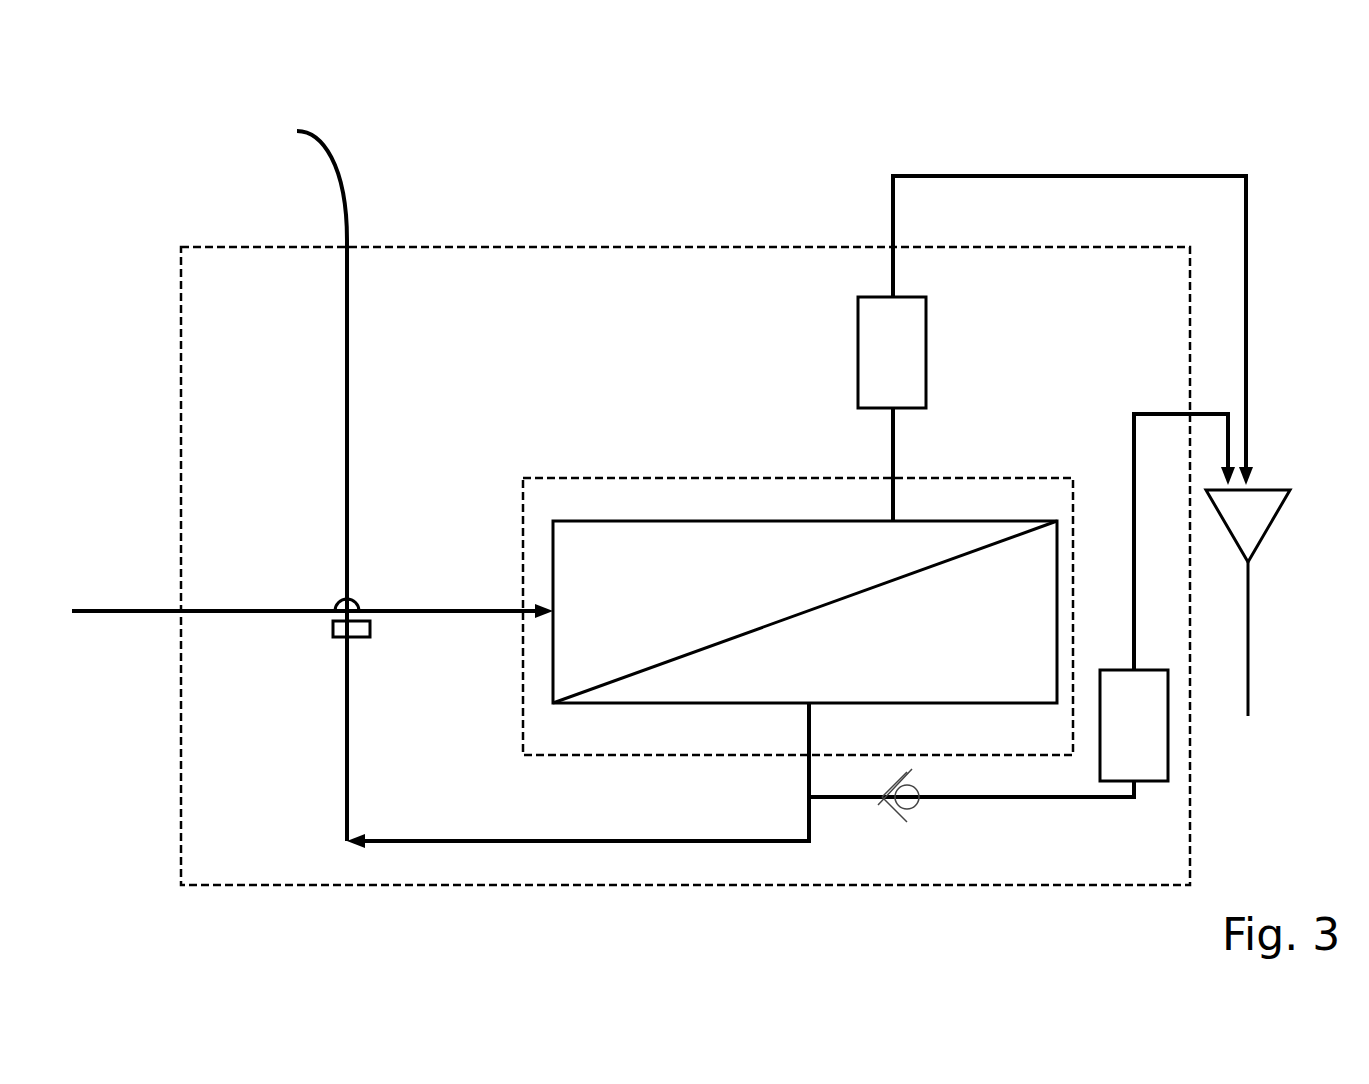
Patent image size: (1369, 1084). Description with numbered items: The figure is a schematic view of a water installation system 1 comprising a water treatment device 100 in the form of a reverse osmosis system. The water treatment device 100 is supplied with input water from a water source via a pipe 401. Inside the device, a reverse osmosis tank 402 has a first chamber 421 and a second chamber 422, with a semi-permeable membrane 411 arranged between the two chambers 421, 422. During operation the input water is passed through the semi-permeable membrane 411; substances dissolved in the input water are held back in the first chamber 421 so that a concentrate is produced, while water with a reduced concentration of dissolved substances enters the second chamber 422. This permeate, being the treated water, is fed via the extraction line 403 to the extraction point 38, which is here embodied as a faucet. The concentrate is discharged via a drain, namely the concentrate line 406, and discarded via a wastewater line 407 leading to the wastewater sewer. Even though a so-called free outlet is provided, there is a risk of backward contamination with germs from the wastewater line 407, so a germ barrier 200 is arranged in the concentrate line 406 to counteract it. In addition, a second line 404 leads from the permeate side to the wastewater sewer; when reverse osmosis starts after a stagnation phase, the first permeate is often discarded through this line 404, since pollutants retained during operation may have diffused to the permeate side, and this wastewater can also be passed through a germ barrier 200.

The water installation system 1 is at (178, 463).
The extraction point 38 is at (338, 150).
The water treatment device 100 is at (637, 482).
The germ barrier 200 is at (855, 308).
The pipe 401 is at (123, 611).
The reverse osmosis tank 402 is at (760, 519).
The extraction line 403 is at (550, 840).
The second line 404 is at (995, 798).
The concentrate line 406 is at (1202, 162).
The wastewater line 407 is at (1262, 548).
The semi-permeable membrane 411 is at (872, 586).
The first chamber 421 is at (725, 601).
The second chamber 422 is at (977, 655).